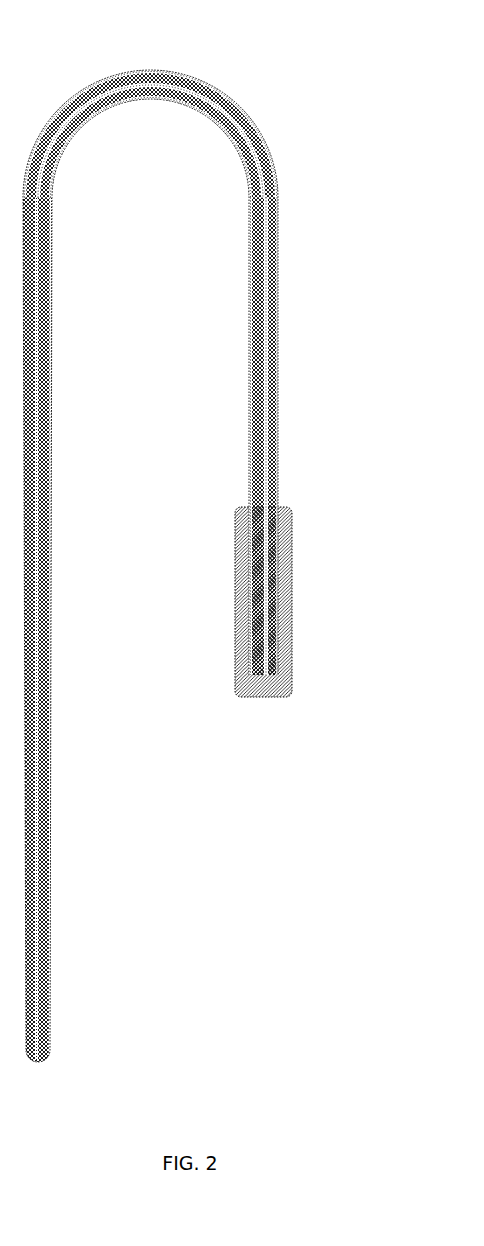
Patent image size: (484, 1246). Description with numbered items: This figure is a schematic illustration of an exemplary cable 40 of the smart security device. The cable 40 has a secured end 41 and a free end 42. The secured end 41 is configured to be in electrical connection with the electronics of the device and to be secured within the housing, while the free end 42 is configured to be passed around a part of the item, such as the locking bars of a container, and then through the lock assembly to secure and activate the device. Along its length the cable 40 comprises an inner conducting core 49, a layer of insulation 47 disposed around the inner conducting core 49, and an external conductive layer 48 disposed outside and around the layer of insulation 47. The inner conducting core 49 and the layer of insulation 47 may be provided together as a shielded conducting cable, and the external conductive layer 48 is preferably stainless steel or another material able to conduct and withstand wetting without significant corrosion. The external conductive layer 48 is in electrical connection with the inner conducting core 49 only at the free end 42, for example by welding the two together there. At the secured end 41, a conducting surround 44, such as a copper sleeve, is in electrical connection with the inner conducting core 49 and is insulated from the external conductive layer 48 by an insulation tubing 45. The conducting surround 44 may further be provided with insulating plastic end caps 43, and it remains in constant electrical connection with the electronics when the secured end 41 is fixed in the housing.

The cable 40 is at (180, 534).
The secured end 41 is at (230, 700).
The free end 42 is at (47, 1045).
The insulating plastic end caps 43 is at (248, 673).
The conducting surround 44 is at (286, 632).
The insulation tubing 45 is at (255, 639).
The layer of insulation 47 is at (43, 320).
The external conductive layer 48 is at (271, 287).
The inner conducting core 49 is at (263, 483).